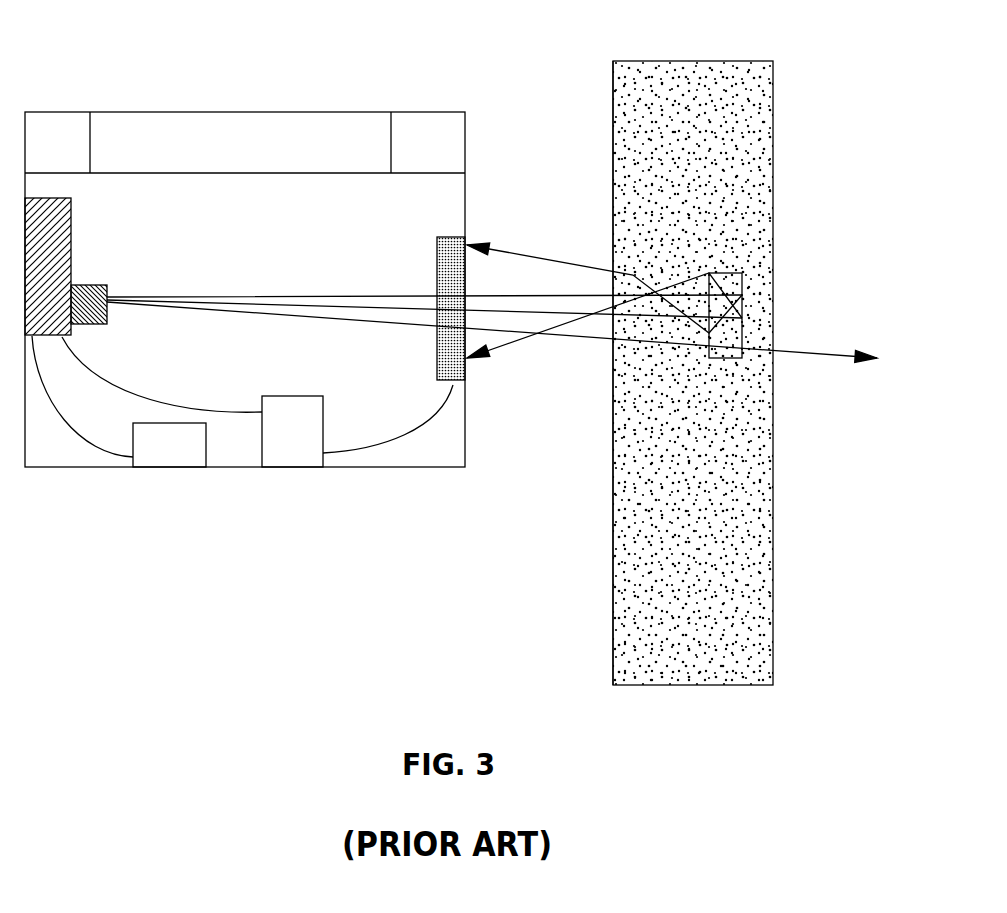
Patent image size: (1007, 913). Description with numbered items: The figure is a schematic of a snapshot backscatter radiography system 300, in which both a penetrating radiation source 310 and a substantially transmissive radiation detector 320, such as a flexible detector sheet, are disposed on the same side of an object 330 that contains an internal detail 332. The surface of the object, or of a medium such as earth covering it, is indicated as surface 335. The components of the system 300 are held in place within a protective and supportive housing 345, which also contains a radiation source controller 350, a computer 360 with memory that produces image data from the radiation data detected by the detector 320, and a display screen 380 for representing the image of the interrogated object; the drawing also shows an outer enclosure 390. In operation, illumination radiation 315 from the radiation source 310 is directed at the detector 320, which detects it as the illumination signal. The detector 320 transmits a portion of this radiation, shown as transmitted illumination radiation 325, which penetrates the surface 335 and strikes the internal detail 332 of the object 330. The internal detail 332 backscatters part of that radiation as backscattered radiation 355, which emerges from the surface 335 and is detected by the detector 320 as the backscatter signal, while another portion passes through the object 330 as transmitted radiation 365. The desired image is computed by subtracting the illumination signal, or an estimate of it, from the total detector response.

The snapshot backscatter radiography system 300 is at (87, 26).
The penetrating radiation source 310 is at (72, 232).
The illumination radiation 315 is at (233, 300).
The substantially transmissive radiation detector 320 is at (470, 380).
The transmitted illumination radiation 325 is at (497, 297).
The object 330 is at (773, 222).
The internal detail 332 is at (742, 293).
The surface 335 is at (612, 548).
The housing 345 is at (243, 112).
The radiation source controller 350 is at (179, 451).
The backscattered radiation 355 is at (530, 252).
The computer 360 is at (293, 449).
The transmitted radiation 365 is at (800, 357).
The display screen 380 is at (192, 147).
The housing 390 is at (466, 193).